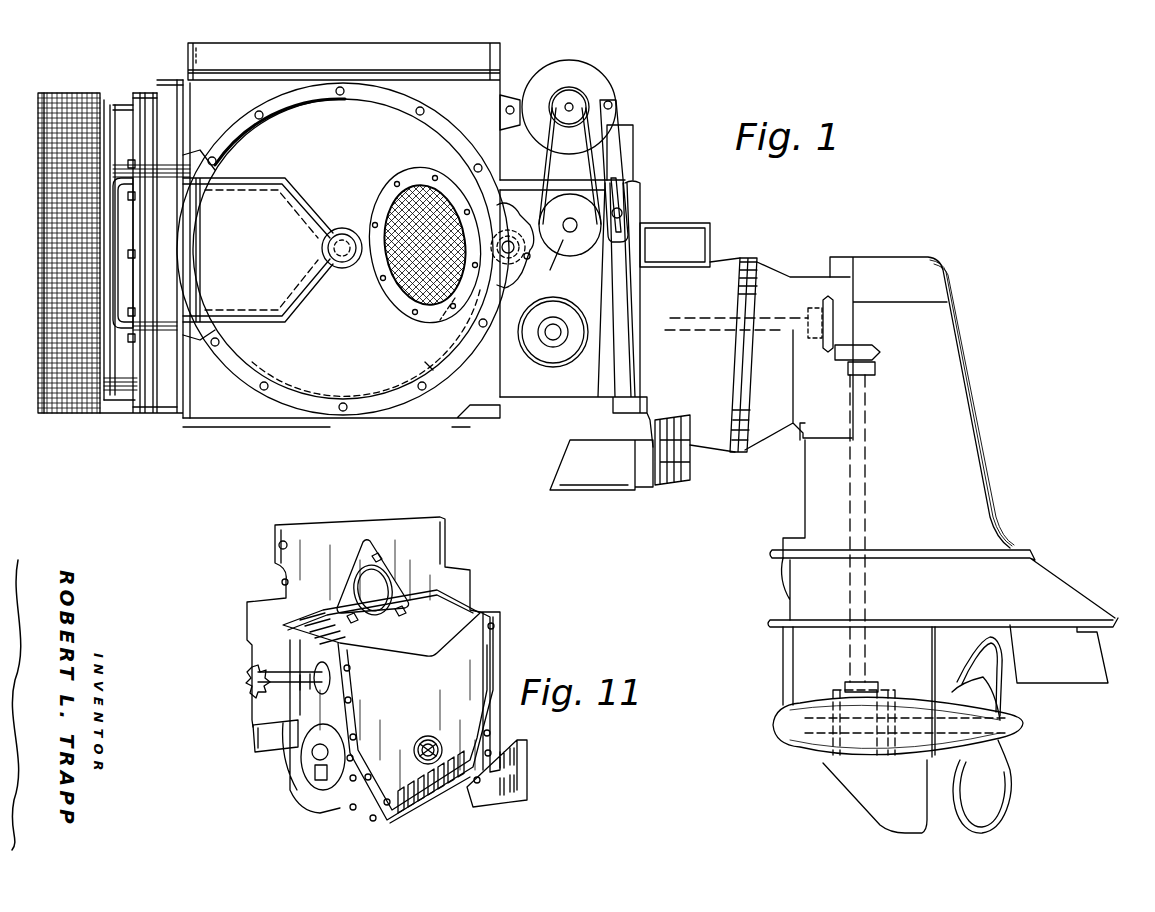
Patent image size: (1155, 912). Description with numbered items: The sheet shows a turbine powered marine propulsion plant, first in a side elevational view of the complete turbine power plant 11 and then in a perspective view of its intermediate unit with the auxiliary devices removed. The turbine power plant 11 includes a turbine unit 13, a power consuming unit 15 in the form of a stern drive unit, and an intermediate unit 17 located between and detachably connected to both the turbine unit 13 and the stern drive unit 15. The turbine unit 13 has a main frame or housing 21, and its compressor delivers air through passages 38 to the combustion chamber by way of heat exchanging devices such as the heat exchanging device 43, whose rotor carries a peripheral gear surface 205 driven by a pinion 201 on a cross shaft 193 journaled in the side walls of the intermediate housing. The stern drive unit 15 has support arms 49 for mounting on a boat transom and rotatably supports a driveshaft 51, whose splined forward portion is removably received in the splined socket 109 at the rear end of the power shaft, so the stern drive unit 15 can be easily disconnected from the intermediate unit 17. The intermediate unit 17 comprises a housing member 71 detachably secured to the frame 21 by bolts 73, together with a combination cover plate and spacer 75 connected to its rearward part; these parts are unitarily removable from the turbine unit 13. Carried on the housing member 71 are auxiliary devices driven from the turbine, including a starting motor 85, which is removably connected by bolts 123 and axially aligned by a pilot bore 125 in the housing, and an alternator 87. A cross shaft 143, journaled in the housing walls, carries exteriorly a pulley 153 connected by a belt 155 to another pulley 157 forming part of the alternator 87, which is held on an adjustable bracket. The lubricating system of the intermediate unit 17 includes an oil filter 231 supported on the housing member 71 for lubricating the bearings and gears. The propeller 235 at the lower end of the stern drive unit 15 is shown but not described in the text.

In FIG. 1, the turbine power plant 11 is at (509, 414).
In FIG. 1, the turbine unit 13 is at (278, 410).
In FIG. 1, the power consuming unit 15 is at (929, 387).
In FIG. 1, the intermediate unit 17 is at (655, 192).
In FIG. 11, the intermediate unit 17 is at (498, 618).
In FIG. 1, the main frame or housing 21 is at (238, 400).
In FIG. 1, the passages 38 is at (282, 330).
In FIG. 1, the heat exchanging device 43 is at (410, 200).
In FIG. 1, the support arms 49 is at (672, 478).
In FIG. 1, the driveshaft 51 is at (785, 335).
In FIG. 1, the housing member 71 is at (532, 397).
In FIG. 11, the housing member 71 is at (428, 580).
In FIG. 11, the bolts 73 is at (354, 810).
In FIG. 11, the combination cover plate and spacer 75 is at (405, 800).
In FIG. 1, the starting motor 85 is at (620, 140).
In FIG. 1, the alternator 87 is at (590, 85).
In FIG. 11, the splined socket 109 is at (428, 735).
In FIG. 11, the bolts 123 is at (380, 558).
In FIG. 11, the pilot bore 125 is at (365, 580).
In FIG. 1, the cross shaft 143 is at (563, 240).
In FIG. 11, the cross shaft 143 is at (290, 705).
In FIG. 1, the pulley 153 is at (574, 240).
In FIG. 1, the belt 155 is at (614, 164).
In FIG. 1, the pulley 157 is at (575, 100).
In FIG. 1, the cross shaft 193 is at (519, 223).
In FIG. 11, the cross shaft 193 is at (258, 684).
In FIG. 1, the pinion 201 is at (455, 298).
In FIG. 11, the pinion 201 is at (252, 668).
In FIG. 1, the gear surface 205 is at (433, 370).
In FIG. 1, the oil filter 231 is at (562, 355).
In FIG. 1, the propeller 235 is at (990, 805).